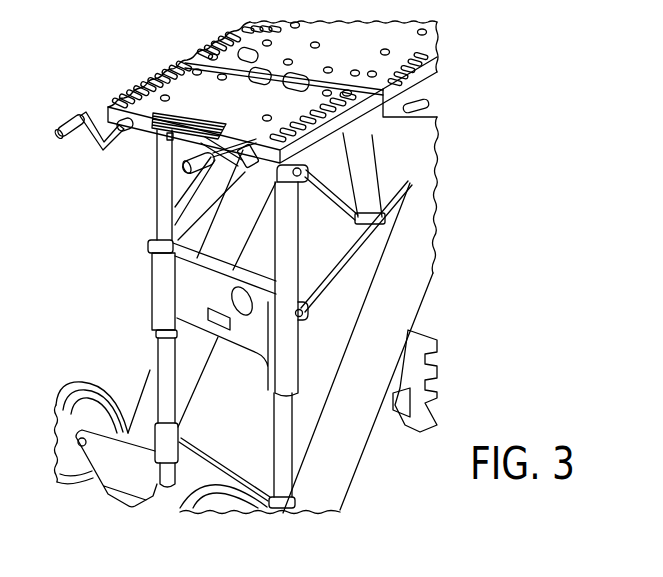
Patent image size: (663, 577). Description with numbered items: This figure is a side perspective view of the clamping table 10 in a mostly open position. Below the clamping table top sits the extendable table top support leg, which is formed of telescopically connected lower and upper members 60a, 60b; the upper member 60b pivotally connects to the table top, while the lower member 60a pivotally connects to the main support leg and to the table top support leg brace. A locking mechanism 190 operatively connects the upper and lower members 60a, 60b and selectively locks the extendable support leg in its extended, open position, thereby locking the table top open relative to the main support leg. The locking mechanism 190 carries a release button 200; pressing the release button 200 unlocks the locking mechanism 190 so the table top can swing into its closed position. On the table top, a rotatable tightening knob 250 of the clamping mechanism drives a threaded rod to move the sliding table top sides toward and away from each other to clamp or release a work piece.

The clamping table 10 is at (505, 82).
The rotatable tightening knob 250 is at (184, 170).
The lower member 60a is at (290, 256).
The upper member 60b is at (283, 445).
The locking mechanism 190 is at (184, 306).
The release button 200 is at (240, 318).